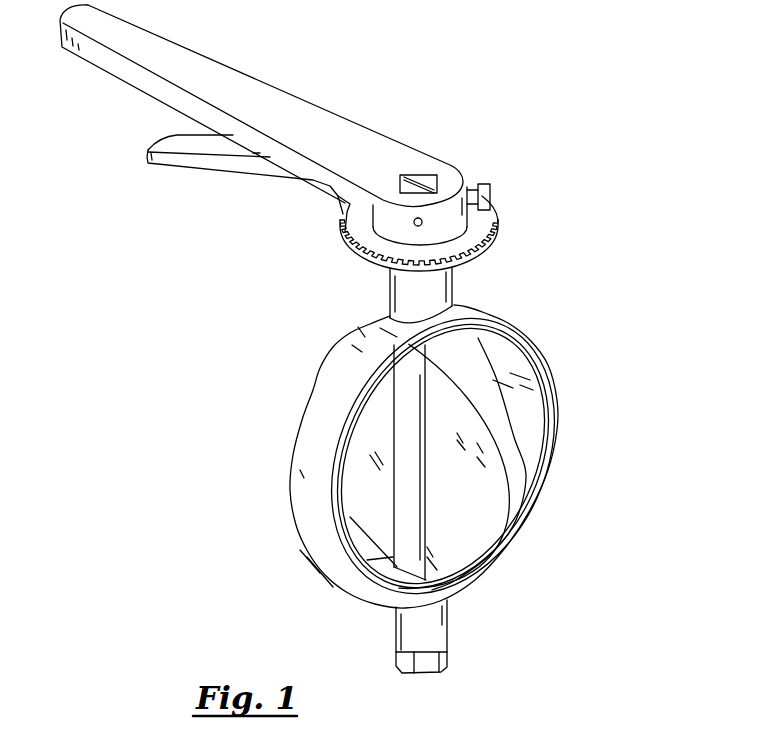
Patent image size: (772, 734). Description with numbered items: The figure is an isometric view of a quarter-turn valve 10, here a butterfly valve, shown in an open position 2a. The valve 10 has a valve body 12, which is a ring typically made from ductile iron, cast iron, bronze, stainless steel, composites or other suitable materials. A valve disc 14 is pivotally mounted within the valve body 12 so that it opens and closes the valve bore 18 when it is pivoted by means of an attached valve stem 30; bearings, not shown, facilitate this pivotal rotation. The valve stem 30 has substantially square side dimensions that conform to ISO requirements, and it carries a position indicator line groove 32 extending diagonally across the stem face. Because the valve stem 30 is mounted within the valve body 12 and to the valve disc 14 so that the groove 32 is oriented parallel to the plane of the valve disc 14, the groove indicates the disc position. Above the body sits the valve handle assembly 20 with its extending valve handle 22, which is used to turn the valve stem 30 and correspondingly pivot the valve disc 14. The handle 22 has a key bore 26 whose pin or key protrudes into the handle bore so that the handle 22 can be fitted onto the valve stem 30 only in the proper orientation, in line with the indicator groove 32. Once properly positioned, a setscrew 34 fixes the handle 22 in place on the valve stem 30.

The open position 2a is at (562, 265).
The quarter-turn valve 10 is at (424, 470).
The valve body 12 is at (307, 507).
The valve disc 14 is at (487, 517).
The valve bore 18 is at (523, 402).
The valve handle assembly 20 is at (229, 177).
The valve handle 22 is at (238, 78).
The key bore 26 is at (413, 224).
The valve stem 30 is at (428, 176).
The position indicator line groove 32 is at (407, 174).
The setscrew 34 is at (490, 186).